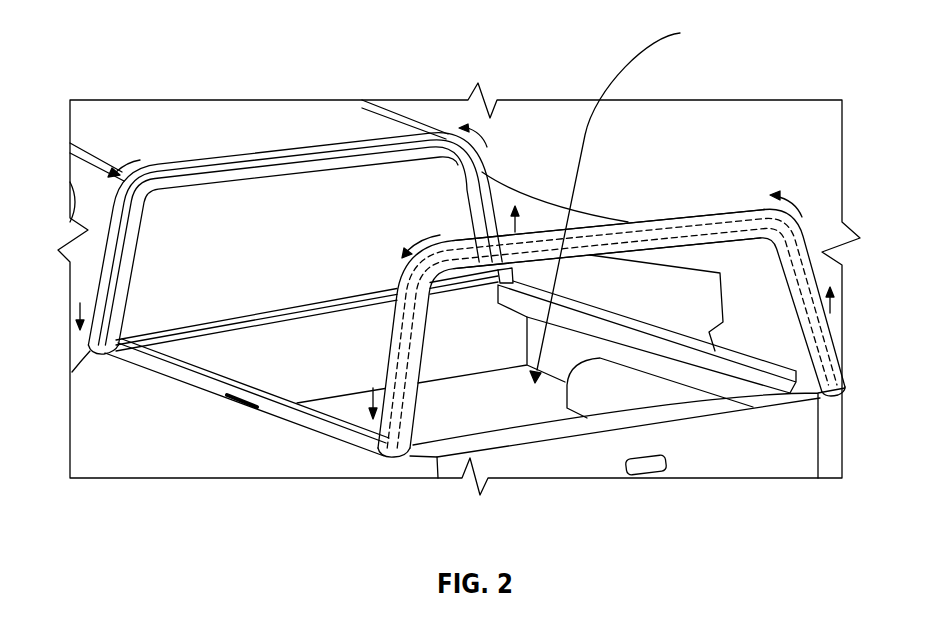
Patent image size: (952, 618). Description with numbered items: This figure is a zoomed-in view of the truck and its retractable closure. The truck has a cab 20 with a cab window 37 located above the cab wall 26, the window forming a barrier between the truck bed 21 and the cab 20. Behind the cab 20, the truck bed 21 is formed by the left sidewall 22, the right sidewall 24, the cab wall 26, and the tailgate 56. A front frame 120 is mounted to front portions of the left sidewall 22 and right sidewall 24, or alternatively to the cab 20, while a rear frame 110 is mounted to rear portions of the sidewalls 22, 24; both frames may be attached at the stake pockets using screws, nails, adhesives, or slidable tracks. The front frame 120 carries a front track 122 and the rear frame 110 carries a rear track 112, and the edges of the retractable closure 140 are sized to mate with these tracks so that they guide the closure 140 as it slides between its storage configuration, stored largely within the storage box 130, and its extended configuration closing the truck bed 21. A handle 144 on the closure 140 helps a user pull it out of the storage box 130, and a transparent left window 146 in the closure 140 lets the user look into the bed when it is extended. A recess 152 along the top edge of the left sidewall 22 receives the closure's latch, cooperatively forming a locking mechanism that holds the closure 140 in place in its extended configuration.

The cab 20 is at (208, 108).
The truck bed 21 is at (615, 197).
The left sidewall 22 is at (80, 393).
The right sidewall 24 is at (535, 345).
The cab wall 26 is at (273, 345).
The cab window 37 is at (358, 205).
The tailgate 56 is at (803, 443).
The rear frame 110 is at (815, 220).
The rear track 112 is at (700, 216).
The front frame 120 is at (480, 155).
The front track 122 is at (204, 172).
The storage box 130 is at (727, 352).
The retractable closure 140 is at (523, 222).
The handle 144 is at (628, 222).
The left window 146 is at (712, 292).
The recess 152 is at (230, 398).